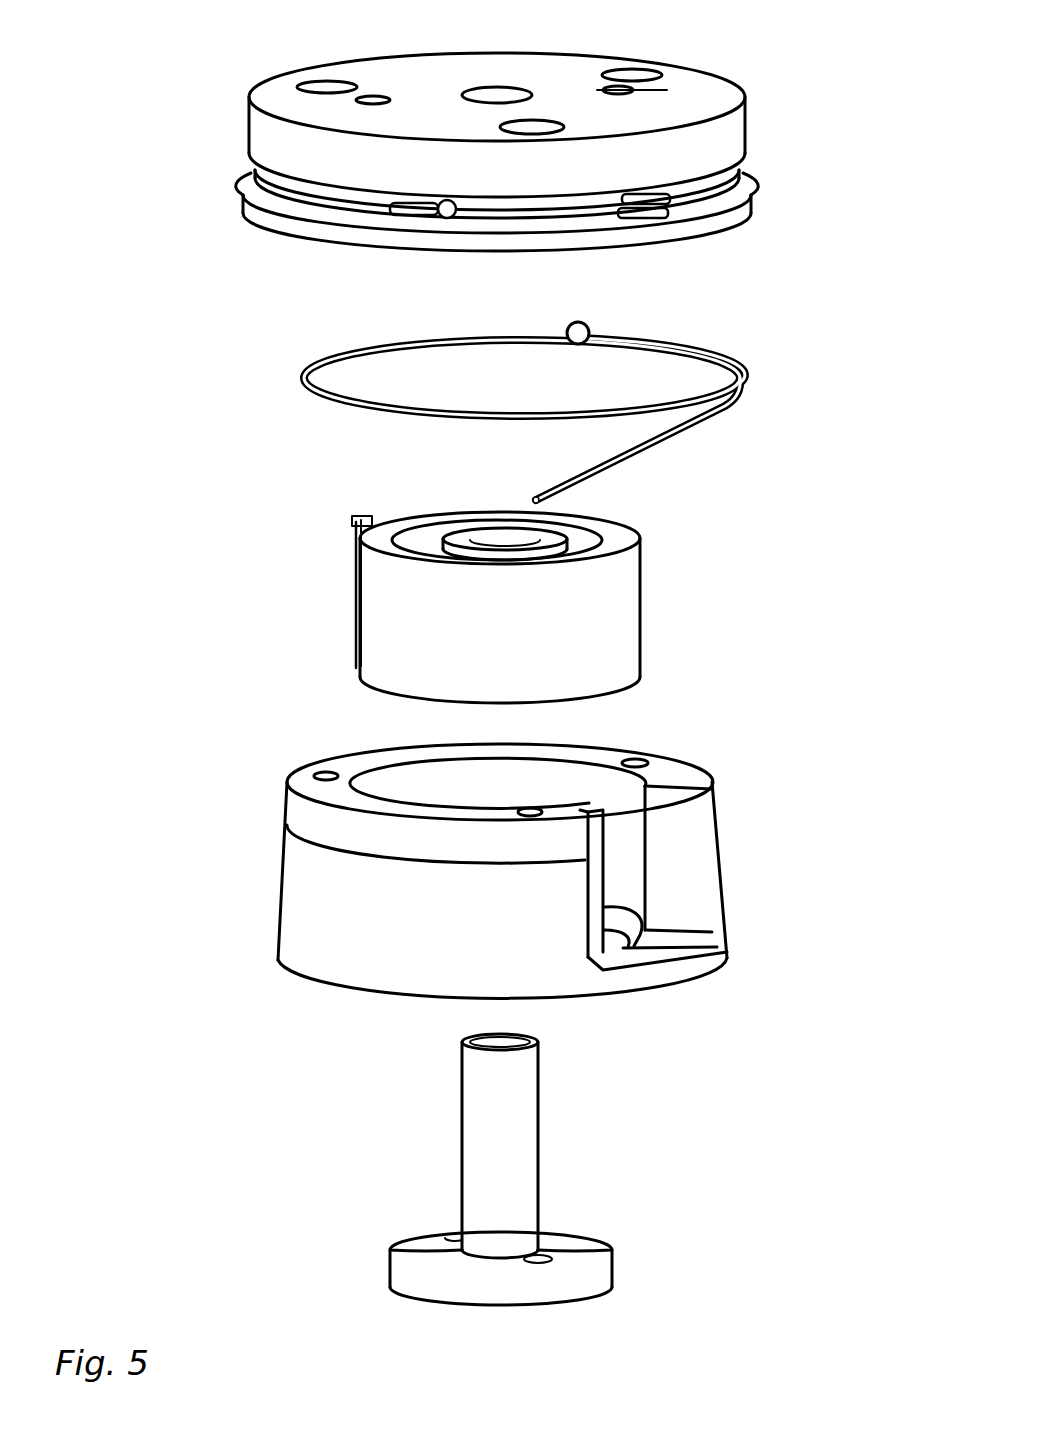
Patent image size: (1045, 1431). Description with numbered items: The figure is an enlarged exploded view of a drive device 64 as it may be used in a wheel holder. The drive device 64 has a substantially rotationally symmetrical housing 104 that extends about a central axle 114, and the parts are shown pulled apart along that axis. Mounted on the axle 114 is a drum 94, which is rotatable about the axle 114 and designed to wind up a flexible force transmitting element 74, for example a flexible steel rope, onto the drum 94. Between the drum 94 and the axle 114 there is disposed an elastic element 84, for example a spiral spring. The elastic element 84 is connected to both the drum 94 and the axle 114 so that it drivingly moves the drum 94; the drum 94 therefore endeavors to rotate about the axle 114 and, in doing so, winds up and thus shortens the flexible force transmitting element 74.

The drive device 64 is at (851, 45).
The drum 94 is at (226, 256).
The flexible force transmitting element 74 is at (757, 341).
The elastic element 84 is at (668, 573).
The housing 104 is at (728, 749).
The axle 114 is at (608, 1108).